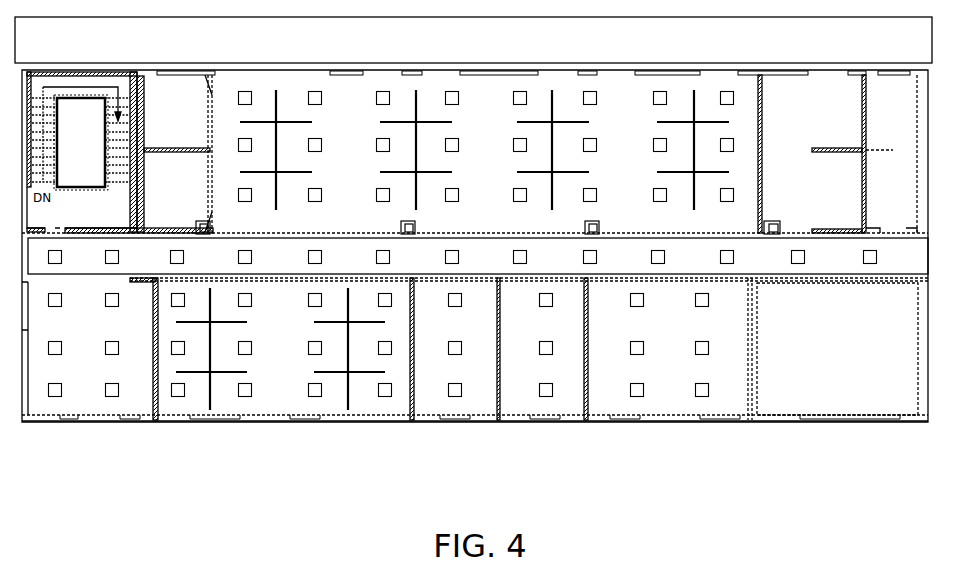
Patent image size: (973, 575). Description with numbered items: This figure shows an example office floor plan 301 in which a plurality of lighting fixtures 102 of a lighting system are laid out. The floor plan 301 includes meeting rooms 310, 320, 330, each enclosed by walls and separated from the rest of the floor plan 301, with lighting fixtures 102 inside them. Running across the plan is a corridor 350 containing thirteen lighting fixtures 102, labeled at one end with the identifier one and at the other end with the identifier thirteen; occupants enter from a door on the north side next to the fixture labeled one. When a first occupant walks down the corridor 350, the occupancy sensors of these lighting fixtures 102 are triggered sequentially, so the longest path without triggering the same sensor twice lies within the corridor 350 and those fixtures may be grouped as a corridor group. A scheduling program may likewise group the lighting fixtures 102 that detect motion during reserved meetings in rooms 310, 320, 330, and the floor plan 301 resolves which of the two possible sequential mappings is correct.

The lighting fixture 102 is at (58, 394).
The corridor 350 is at (424, 252).
The floor plan 301 is at (386, 422).
The meeting room 310 is at (478, 392).
The meeting room 320 is at (562, 392).
The meeting room 330 is at (675, 392).